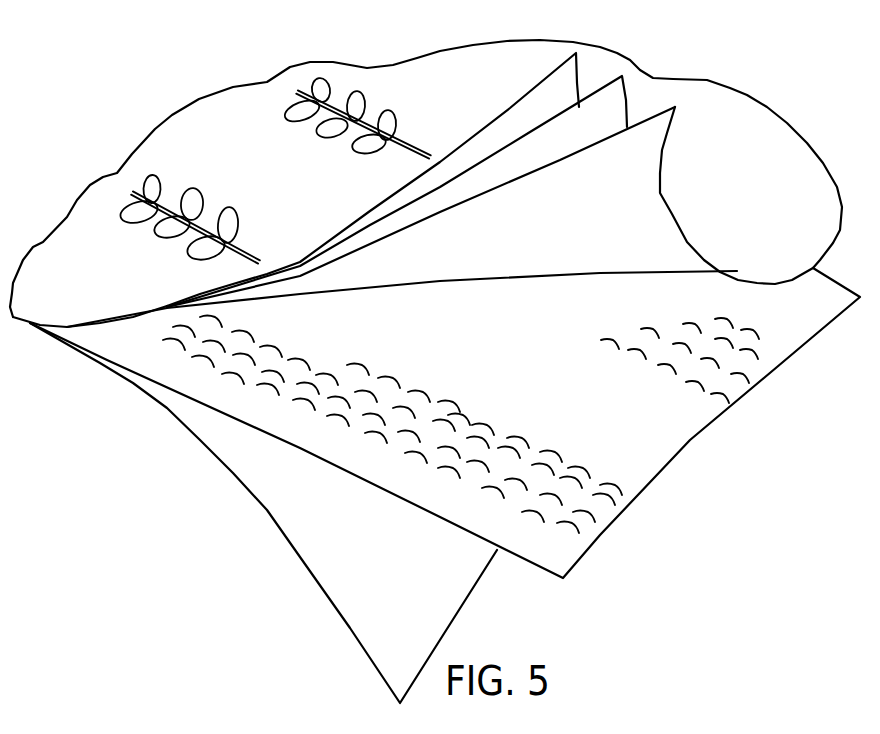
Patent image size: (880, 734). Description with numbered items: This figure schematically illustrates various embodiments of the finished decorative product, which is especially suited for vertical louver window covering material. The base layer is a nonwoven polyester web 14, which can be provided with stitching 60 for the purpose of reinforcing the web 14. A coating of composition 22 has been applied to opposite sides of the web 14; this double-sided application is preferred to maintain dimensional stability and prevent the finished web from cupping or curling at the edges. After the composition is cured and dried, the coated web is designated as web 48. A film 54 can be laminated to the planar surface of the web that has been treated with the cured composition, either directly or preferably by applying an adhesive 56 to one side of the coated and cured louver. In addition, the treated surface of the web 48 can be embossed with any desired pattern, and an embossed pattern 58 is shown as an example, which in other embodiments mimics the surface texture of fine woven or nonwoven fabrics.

The polyester web 14 is at (660, 457).
The coating of composition 22 is at (657, 146).
The web 48 is at (89, 208).
The film 54 is at (530, 88).
The adhesive 56 is at (615, 77).
The embossed pattern 58 is at (165, 196).
The stitching 60 is at (458, 476).